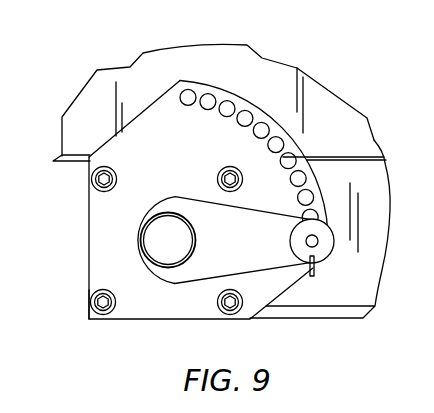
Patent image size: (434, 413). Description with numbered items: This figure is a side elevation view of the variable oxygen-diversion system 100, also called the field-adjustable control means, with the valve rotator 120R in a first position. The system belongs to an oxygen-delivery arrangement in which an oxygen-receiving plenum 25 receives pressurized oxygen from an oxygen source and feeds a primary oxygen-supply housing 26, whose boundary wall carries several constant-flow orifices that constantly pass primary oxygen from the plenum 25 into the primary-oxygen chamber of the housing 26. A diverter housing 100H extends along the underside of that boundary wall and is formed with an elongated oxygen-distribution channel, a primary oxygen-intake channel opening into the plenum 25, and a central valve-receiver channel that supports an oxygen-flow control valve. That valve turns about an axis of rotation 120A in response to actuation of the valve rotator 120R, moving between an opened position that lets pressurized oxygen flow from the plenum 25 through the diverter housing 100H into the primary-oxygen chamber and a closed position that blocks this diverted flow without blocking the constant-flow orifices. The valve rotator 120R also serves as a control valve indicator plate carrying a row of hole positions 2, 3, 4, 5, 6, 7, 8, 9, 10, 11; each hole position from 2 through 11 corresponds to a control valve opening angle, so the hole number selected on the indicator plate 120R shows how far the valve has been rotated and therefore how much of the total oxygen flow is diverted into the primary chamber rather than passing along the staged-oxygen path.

The adjustment hole 2 is at (320, 214).
The adjustment hole 3 is at (313, 195).
The adjustment hole 4 is at (290, 184).
The adjustment hole 5 is at (296, 157).
The adjustment hole 6 is at (268, 147).
The adjustment hole 7 is at (263, 122).
The adjustment hole 8 is at (242, 127).
The adjustment hole 9 is at (232, 101).
The adjustment hole 10 is at (203, 110).
The adjustment hole 11 is at (188, 89).
The oxygen-receiving plenum 25 is at (339, 287).
The primary oxygen-supply housing 26 is at (330, 72).
The variable oxygen-diversion system 100 is at (76, 209).
The diverter housing 100H is at (76, 315).
The axis of rotation 120A is at (168, 240).
The valve rotator 120R is at (158, 301).